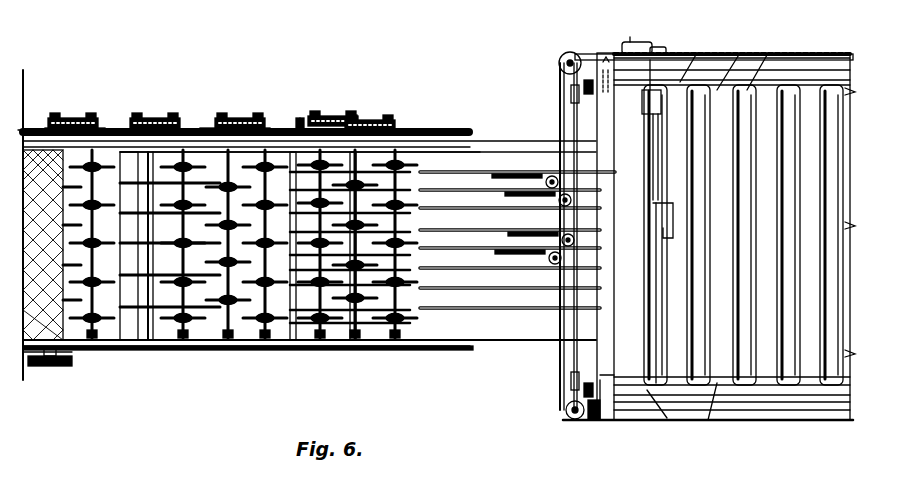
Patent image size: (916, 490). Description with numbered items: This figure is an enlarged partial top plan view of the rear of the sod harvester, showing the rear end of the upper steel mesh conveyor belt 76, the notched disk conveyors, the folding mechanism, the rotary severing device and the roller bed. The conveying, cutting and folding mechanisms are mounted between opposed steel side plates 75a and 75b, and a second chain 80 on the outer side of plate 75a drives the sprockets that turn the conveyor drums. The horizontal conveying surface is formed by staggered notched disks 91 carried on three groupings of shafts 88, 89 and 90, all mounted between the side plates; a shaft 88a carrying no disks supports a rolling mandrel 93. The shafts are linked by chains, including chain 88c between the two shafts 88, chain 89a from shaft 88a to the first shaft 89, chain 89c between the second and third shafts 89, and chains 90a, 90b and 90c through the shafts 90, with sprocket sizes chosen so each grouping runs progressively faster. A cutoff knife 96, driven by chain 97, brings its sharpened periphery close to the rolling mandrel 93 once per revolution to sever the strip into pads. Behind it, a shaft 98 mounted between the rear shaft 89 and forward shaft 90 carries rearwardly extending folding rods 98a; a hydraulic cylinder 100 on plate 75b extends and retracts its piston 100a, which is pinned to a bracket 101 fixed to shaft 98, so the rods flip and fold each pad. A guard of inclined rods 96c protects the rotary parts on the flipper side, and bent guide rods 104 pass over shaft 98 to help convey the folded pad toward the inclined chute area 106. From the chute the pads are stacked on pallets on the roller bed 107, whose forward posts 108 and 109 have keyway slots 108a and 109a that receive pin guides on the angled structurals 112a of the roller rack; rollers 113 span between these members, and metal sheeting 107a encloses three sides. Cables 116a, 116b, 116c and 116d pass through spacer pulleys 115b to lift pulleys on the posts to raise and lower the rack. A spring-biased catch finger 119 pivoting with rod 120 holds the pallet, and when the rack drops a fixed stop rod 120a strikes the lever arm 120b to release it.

The steel side plate 75a is at (215, 348).
The steel side plate 75b is at (70, 118).
The steel mesh conveyor belt 76 is at (32, 130).
The second chain 80 is at (44, 368).
The shaft 88 is at (92, 340).
The shaft 88a is at (150, 340).
The chain 88c is at (82, 127).
The shaft 89 is at (262, 340).
The chain 89a is at (183, 118).
The chain 89c is at (245, 118).
The shaft 90 is at (372, 346).
The chain 90a is at (330, 116).
The chain 90b is at (370, 120).
The chain 90c is at (395, 120).
The notched disk 91 is at (78, 330).
The rolling mandrel 93 is at (125, 340).
The cutoff knife 96 is at (152, 118).
The inclined rod 96c is at (220, 330).
The chain 97 is at (128, 128).
The shaft 98 is at (293, 340).
The rod 98a is at (360, 150).
The hydraulic cylinder 100 is at (222, 118).
The piston 100a is at (270, 127).
The bracket 101 is at (302, 118).
The rod 104 is at (322, 340).
The inclined chute area 106 is at (442, 187).
The roller bed 107 is at (725, 333).
The metal sheeting 107a is at (584, 392).
The forward post 108 is at (559, 59).
The slot 108a is at (622, 53).
The forward post 109 is at (600, 420).
The slot 109a is at (608, 421).
The angled structural 112a is at (720, 50).
The roller 113 is at (772, 52).
The spacer pulley 115b is at (568, 86).
The cable 116a is at (571, 120).
The cable 116b is at (600, 357).
The cable 116c is at (850, 52).
The cable 116d is at (830, 421).
The catch finger 119 is at (653, 205).
The rod 120 is at (653, 120).
The fixed stop rod 120a is at (634, 41).
The lever arm 120b is at (676, 40).